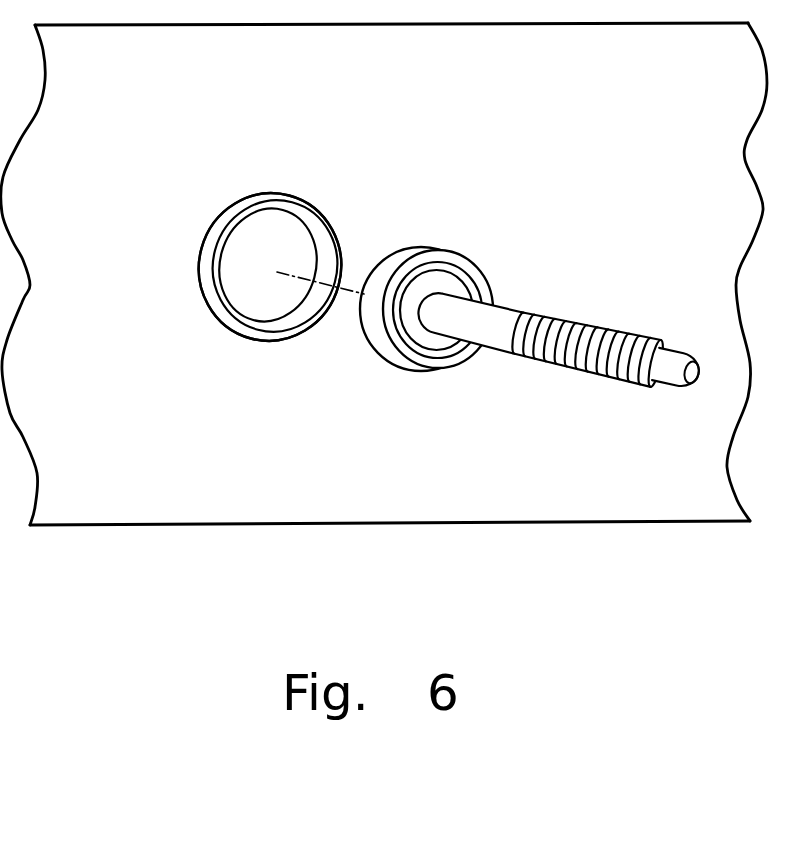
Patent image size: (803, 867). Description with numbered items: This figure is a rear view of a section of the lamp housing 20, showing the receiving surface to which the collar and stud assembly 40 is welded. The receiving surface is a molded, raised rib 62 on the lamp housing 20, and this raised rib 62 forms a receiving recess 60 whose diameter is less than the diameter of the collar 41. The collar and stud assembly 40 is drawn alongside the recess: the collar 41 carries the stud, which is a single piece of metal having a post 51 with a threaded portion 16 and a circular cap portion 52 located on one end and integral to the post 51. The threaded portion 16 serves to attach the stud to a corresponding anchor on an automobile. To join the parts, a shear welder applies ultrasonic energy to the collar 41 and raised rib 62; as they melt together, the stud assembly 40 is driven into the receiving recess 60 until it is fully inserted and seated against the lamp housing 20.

The lamp housing 20 is at (145, 510).
The raised rib 62 is at (220, 311).
The receiving recess 60 is at (270, 302).
The collar 41 is at (372, 330).
The cap portion 52 is at (436, 347).
The threaded portion 16 is at (566, 316).
The post 51 is at (672, 380).
The collar and stud assembly 40 is at (526, 352).